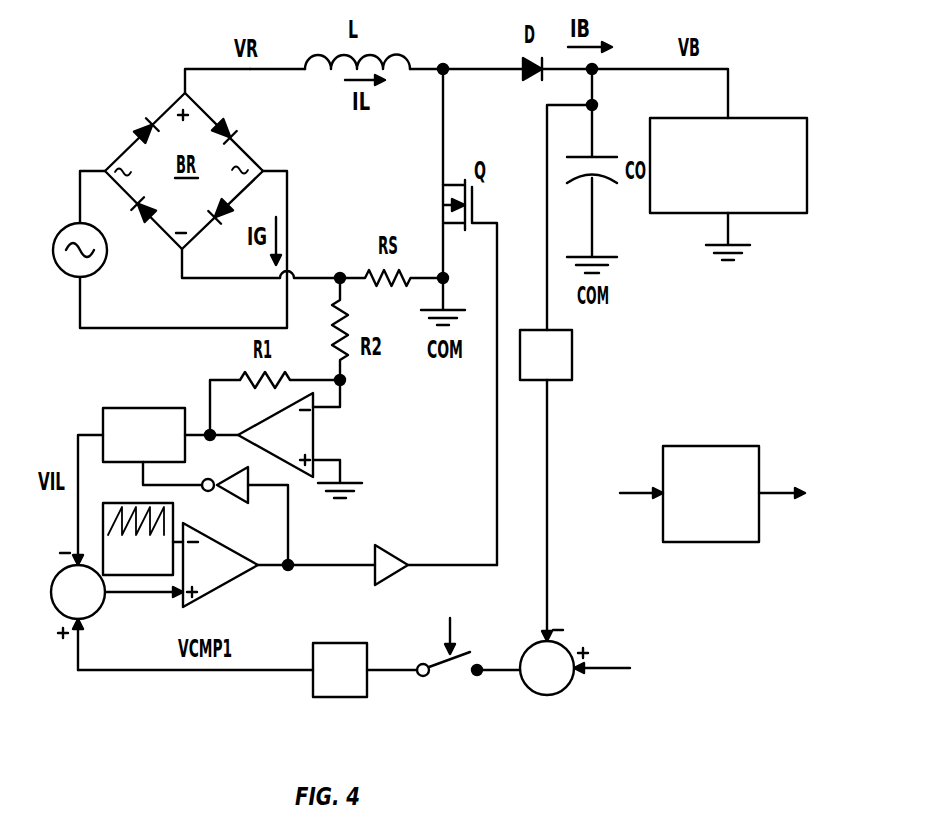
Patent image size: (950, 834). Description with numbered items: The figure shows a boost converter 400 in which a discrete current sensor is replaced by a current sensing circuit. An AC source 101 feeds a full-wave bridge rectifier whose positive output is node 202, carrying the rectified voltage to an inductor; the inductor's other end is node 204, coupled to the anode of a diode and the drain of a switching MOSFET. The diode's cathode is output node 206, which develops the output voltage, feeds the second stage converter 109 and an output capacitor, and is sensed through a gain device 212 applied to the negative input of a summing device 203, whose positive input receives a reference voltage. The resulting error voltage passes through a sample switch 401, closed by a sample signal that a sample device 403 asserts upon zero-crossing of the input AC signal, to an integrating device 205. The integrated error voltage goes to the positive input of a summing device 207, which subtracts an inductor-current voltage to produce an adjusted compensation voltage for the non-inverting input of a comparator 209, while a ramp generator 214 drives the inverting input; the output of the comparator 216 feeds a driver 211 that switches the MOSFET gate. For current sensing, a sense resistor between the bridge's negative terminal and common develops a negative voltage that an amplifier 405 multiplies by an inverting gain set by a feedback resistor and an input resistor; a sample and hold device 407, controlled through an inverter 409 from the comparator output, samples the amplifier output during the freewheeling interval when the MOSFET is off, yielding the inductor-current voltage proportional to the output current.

The AC source 101 is at (68, 223).
The node 202 is at (190, 68).
The node 204 is at (447, 65).
The output node 206 is at (660, 68).
The second stage converter 109 is at (790, 118).
The gain device 212 is at (572, 345).
The boost converter 400 is at (630, 431).
The sample device 403 is at (738, 446).
The sample and hold device 407 is at (152, 407).
The inverter 409 is at (236, 475).
The amplifier 405 is at (305, 436).
The driver 211 is at (393, 547).
The summing device 207 is at (58, 570).
The ramp generator 214 is at (157, 570).
The comparator 216 is at (271, 543).
The comparator 209 is at (200, 598).
The integrating device 205 is at (360, 643).
The summing device 203 is at (532, 648).
The sample switch 401 is at (443, 676).